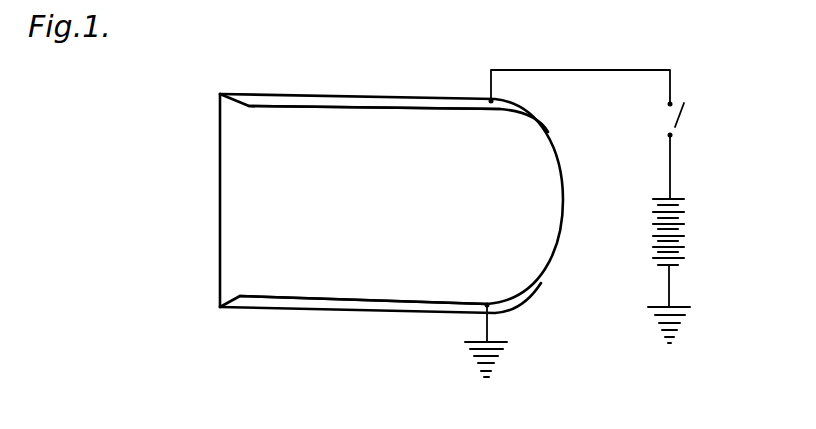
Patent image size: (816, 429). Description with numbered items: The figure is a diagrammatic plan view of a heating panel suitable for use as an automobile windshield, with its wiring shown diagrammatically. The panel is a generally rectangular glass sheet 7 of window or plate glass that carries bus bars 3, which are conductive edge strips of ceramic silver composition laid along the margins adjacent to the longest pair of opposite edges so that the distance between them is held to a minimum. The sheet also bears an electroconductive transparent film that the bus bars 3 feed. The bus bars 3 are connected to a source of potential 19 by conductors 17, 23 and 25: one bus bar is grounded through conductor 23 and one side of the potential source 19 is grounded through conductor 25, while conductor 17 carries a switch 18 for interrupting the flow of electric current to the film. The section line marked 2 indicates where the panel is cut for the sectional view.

The section line 2- 2 is at (355, 155).
The bus bars 3 is at (260, 100).
The glass sheet 7 is at (239, 226).
The conductor 17 is at (584, 70).
The switch 18 is at (680, 118).
The source of potential 19 is at (668, 247).
The conductor 23 is at (487, 329).
The conductor 25 is at (669, 291).